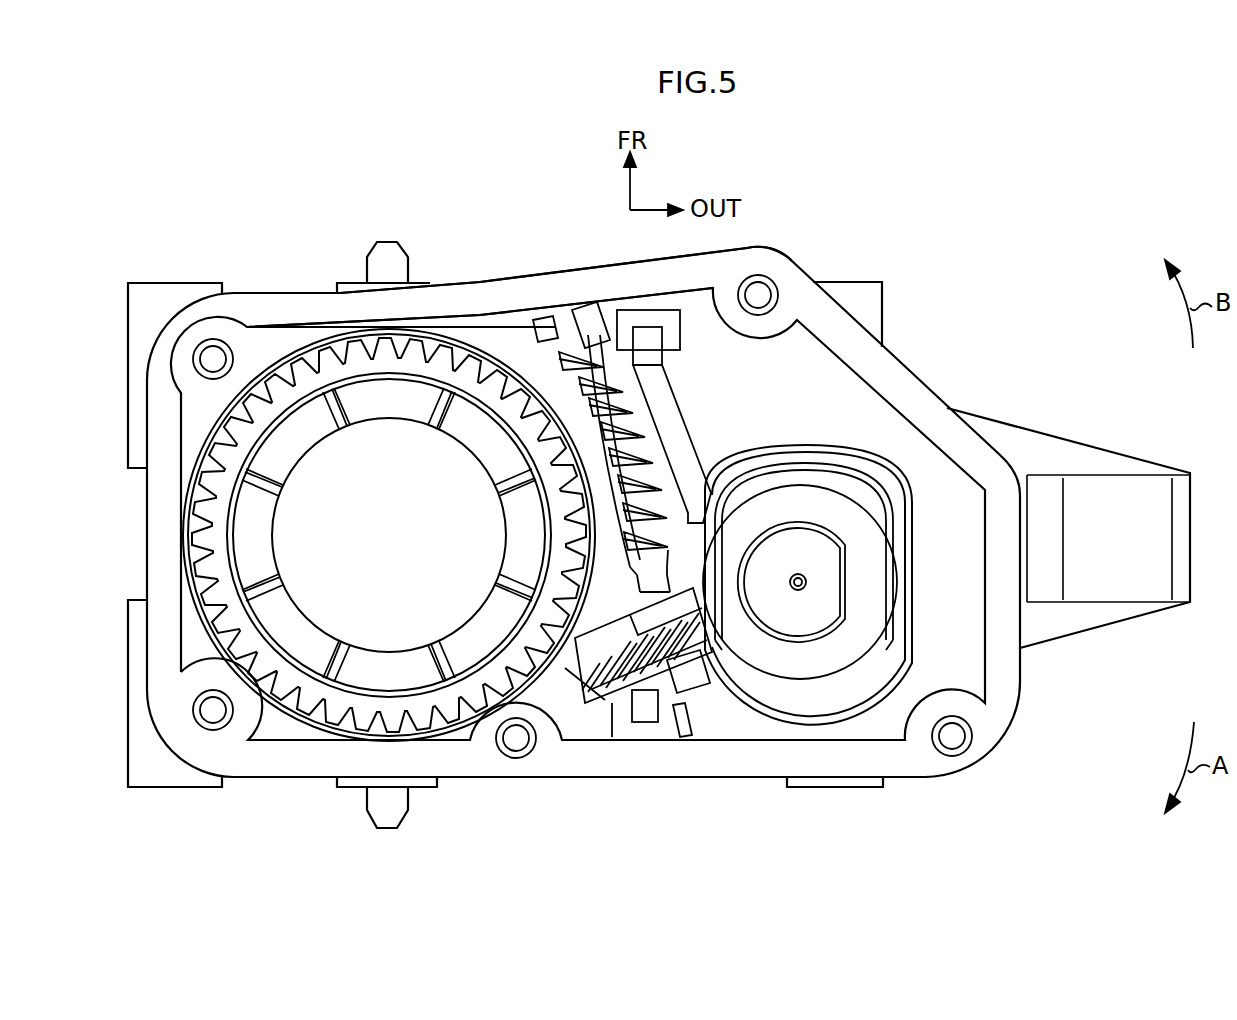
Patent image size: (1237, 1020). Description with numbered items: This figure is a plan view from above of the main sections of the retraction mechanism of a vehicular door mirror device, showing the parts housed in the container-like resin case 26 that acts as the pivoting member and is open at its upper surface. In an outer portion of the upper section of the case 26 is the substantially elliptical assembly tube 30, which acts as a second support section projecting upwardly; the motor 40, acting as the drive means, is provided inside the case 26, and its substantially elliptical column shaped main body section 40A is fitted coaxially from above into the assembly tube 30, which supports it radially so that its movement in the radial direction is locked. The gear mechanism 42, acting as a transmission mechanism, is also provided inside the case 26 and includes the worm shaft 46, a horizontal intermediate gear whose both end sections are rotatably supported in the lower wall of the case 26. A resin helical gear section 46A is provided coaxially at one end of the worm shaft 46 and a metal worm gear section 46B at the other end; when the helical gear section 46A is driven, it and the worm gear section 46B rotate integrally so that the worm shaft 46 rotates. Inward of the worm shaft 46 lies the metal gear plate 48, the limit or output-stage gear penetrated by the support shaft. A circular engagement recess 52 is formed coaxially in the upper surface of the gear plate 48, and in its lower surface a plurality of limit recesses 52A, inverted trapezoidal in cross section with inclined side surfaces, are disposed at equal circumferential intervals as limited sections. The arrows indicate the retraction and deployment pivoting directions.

The case 26 is at (586, 268).
The gear plate 48 is at (292, 355).
The engagement recess 52 is at (236, 535).
The limit recesses 52A is at (379, 479).
The worm shaft 46 is at (590, 697).
The gear mechanism 42 is at (644, 704).
The helical gear section 46A is at (643, 677).
The worm gear section 46B is at (630, 407).
The assembly tube 30 is at (740, 462).
The motor 40 is at (800, 466).
The main body section 40A is at (872, 583).